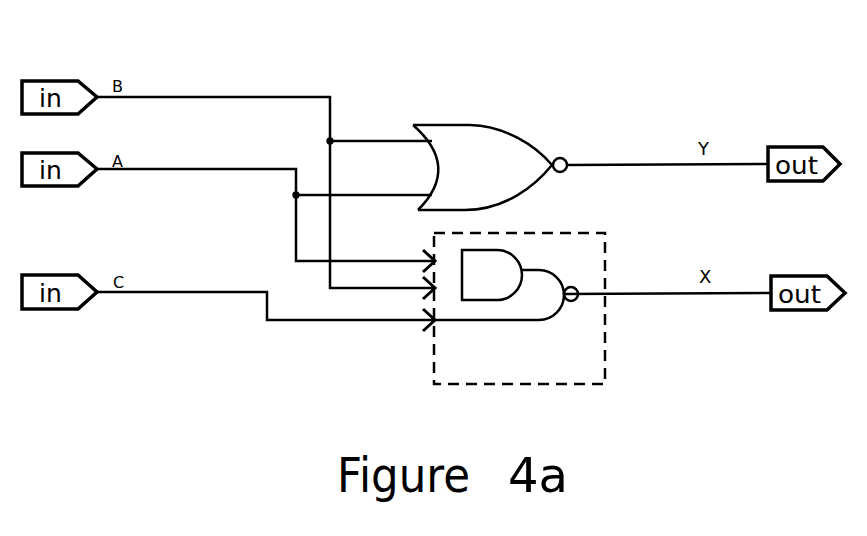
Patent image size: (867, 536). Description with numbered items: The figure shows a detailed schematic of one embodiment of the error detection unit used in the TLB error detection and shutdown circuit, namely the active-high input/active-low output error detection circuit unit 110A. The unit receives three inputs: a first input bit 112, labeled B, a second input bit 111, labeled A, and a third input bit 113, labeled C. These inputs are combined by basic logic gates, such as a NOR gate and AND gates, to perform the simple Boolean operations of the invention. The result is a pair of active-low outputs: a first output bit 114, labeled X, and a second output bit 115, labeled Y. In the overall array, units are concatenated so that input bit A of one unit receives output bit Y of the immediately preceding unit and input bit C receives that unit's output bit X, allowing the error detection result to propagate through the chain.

The active-high input/active-low output error detection circuit unit 110A is at (501, 193).
The second input bit 111 is at (265, 200).
The first input bit 112 is at (265, 177).
The third input bit 113 is at (265, 292).
The first output bit 114 is at (667, 257).
The second output bit 115 is at (667, 133).